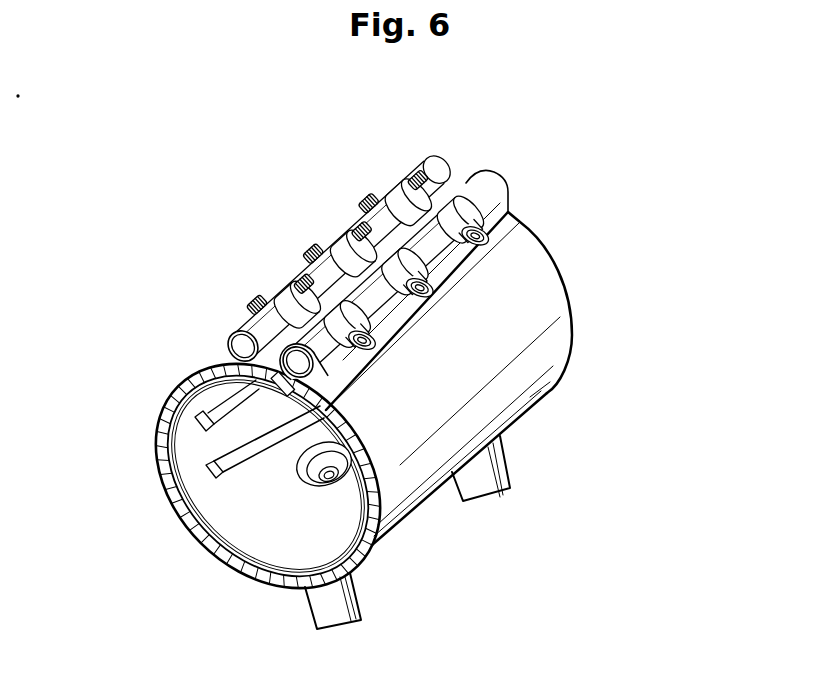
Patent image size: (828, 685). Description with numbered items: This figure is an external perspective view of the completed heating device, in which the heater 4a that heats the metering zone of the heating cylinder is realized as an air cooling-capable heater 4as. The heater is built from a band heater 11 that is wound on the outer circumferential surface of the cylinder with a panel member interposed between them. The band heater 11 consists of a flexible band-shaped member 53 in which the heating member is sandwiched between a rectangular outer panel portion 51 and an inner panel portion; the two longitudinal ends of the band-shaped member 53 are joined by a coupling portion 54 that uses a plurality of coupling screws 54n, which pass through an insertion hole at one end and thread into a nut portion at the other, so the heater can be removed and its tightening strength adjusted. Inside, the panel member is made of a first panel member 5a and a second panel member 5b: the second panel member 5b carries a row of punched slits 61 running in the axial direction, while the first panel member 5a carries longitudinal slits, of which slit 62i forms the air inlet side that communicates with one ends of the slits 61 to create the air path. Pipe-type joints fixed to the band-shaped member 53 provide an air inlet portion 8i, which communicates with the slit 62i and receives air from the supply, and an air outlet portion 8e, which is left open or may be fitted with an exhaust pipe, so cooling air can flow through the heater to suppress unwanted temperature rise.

The heater 4a is at (352, 443).
The air cooling-capable heater 4as is at (374, 249).
The first panel member 5a is at (239, 502).
The second panel member 5b is at (227, 521).
The air outlet portion 8e is at (511, 469).
The air inlet portion 8i is at (363, 606).
The band heater 11 is at (511, 373).
The outer panel portion 51 is at (525, 333).
The band-shaped member 53 is at (578, 322).
The coupling portion 54 is at (514, 181).
The coupling screws 54n is at (356, 191).
The slits 61 is at (219, 478).
The slit 62i is at (207, 422).